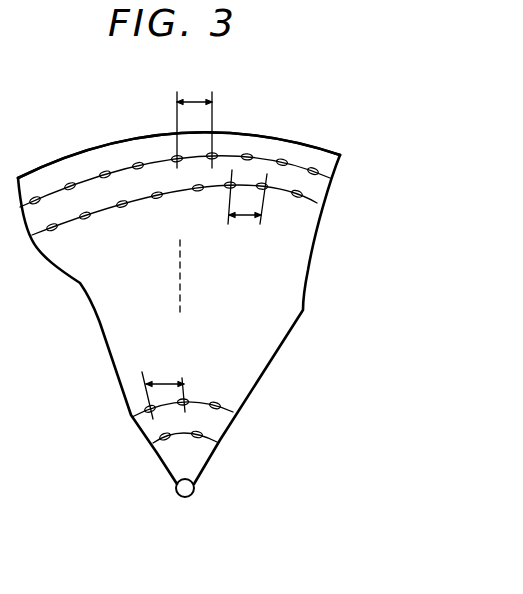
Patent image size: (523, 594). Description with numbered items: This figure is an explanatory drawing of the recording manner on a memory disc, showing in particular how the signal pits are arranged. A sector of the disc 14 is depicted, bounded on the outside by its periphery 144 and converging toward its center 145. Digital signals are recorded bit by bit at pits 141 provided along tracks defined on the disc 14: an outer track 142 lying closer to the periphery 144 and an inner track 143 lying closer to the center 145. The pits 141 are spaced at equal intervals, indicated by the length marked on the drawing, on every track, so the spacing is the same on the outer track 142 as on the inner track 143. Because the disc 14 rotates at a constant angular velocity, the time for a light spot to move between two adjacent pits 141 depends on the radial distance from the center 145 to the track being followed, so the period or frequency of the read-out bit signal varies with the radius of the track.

The disc 14 is at (136, 279).
The pits 141 is at (284, 160).
The outer track 142 is at (312, 204).
The inner track 143 is at (230, 410).
The periphery 144 is at (105, 136).
The center 145 is at (193, 492).